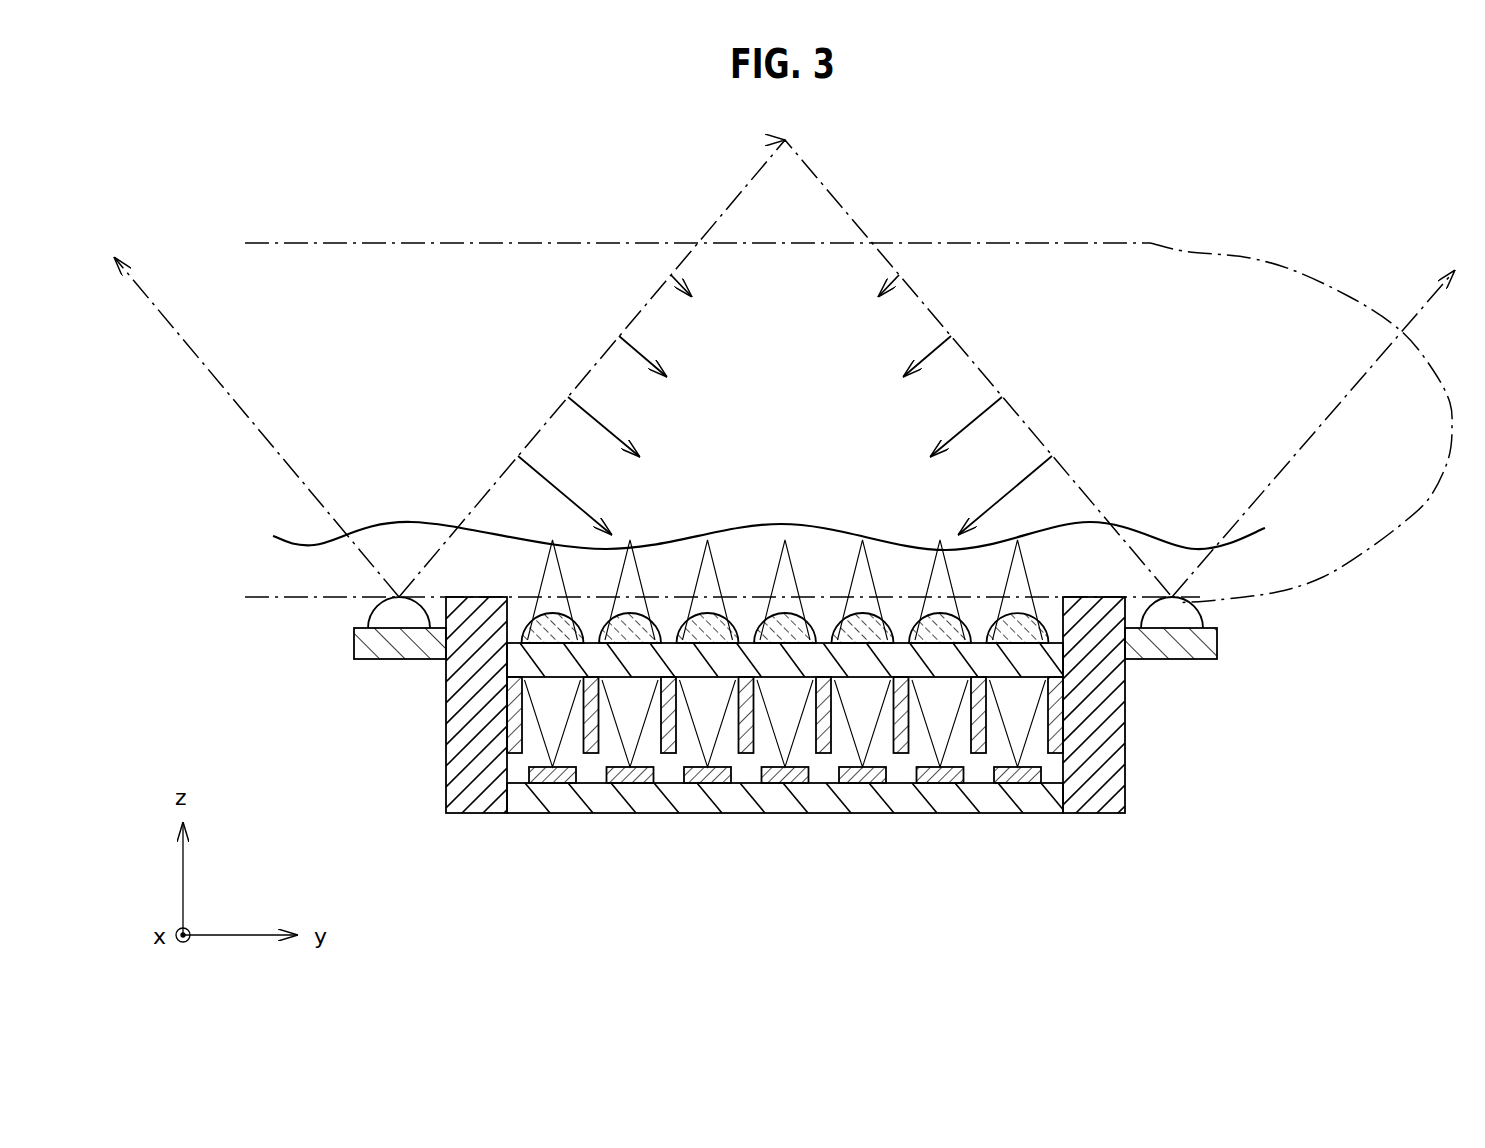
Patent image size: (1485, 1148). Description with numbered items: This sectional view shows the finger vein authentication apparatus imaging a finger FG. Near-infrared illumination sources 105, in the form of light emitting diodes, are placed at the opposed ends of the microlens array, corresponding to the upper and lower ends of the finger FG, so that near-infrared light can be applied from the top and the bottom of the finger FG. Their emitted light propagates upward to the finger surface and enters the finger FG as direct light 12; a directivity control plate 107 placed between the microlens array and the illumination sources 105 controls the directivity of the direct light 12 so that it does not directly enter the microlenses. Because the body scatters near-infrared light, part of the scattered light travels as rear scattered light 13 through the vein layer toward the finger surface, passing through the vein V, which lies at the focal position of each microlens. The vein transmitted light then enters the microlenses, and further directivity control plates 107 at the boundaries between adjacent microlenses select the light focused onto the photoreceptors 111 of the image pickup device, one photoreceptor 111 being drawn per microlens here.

The direct light 12 is at (422, 292).
The rear scattered light 13 is at (787, 470).
The finger FG is at (983, 243).
The vein V is at (1125, 522).
The near-infrared illumination source 105 is at (384, 660).
The directivity control plate 107 is at (446, 792).
The photoreceptor 111 is at (553, 784).